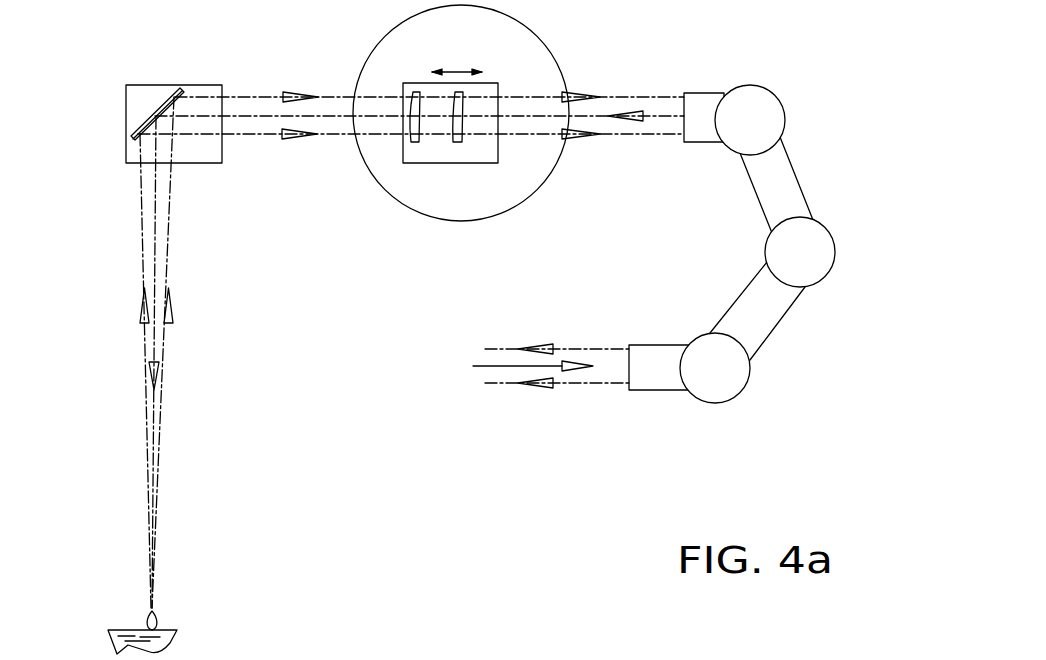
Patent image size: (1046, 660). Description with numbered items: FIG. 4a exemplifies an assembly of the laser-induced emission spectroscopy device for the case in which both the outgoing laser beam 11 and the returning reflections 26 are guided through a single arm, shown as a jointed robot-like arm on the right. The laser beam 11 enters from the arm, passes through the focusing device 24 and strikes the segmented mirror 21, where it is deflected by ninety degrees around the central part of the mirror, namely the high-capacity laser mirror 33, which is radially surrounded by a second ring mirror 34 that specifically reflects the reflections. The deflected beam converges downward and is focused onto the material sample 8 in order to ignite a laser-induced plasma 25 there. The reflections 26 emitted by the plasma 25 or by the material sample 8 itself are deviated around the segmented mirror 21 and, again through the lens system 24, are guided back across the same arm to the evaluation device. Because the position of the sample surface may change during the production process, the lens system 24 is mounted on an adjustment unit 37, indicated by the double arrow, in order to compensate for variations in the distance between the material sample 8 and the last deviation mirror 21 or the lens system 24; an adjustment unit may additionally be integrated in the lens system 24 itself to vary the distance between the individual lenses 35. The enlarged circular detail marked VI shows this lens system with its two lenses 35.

The material sample 8 is at (158, 642).
The laser beam 11 is at (510, 367).
The segmented mirror 21 is at (153, 94).
The focusing device 24 is at (498, 172).
The laser-induced plasma 25 is at (158, 612).
The reflections 26 is at (240, 135).
The high-capacity laser mirror 33 is at (156, 119).
The ring mirror 34 is at (134, 143).
The lenses 35 is at (420, 110).
The adjustment unit 37 is at (487, 63).
The detail view marker VI is at (388, 202).